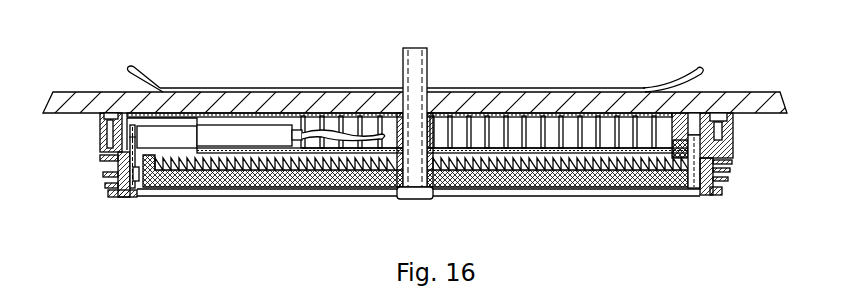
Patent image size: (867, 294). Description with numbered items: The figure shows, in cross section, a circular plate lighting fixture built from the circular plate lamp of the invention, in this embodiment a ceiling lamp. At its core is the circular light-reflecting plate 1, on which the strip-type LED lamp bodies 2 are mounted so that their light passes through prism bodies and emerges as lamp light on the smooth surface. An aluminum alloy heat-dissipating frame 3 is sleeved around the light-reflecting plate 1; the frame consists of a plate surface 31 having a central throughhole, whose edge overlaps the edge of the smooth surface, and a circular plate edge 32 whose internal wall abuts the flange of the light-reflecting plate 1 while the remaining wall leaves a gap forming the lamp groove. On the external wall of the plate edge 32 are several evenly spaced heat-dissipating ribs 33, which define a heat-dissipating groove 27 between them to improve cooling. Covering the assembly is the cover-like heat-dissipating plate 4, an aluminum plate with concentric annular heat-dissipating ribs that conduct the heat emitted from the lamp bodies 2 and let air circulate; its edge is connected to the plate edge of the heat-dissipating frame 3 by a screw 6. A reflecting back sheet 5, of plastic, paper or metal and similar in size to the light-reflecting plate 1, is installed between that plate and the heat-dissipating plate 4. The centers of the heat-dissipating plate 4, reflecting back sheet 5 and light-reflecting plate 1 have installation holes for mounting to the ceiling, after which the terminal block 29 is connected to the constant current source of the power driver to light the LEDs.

The circular light-reflecting plate 1 is at (727, 181).
The lamp body 2 is at (734, 148).
The heat-dissipating frame 3 is at (714, 190).
The heat-dissipating plate 4 is at (698, 73).
The reflecting back sheet 5 is at (710, 130).
The screw 6 is at (100, 135).
The heat-dissipating groove 27 is at (112, 180).
The terminal block 29 is at (217, 133).
The plate surface 31 is at (129, 193).
The plate edge 32 is at (121, 169).
The heat-dissipating rib 33 is at (100, 162).